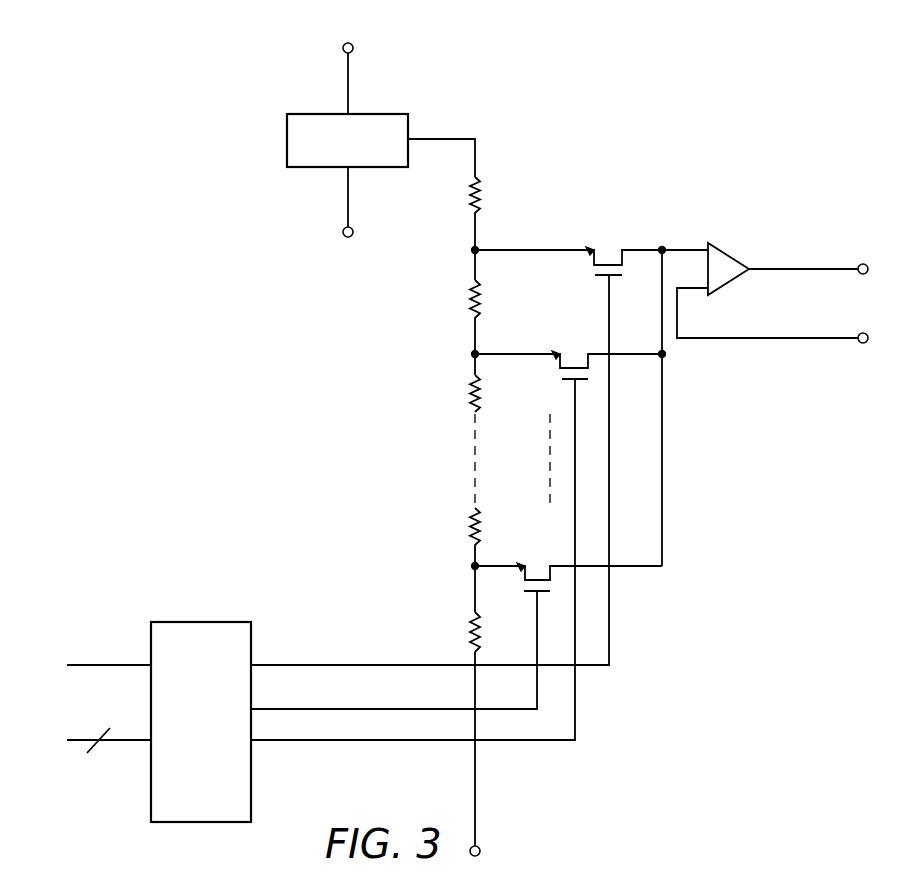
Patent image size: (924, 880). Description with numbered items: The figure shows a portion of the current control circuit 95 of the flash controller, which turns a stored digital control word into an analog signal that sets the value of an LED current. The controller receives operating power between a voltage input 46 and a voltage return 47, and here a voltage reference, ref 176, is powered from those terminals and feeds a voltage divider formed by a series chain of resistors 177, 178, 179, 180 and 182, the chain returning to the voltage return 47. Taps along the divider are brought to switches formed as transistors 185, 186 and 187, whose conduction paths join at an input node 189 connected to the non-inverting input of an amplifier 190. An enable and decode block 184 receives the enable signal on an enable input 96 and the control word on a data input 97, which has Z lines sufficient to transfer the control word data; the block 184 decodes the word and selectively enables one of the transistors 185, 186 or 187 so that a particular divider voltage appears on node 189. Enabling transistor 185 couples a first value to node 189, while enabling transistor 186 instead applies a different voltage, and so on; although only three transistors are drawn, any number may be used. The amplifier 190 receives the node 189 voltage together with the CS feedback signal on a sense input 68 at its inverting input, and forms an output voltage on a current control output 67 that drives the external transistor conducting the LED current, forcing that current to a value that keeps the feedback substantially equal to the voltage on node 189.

The voltage input 46 is at (353, 46).
The voltage return 47 is at (342, 237).
The current control output 67 is at (863, 264).
The sense input 68 is at (863, 333).
The current control circuit 95 is at (609, 812).
The enable input 96 is at (74, 662).
The data input 97 is at (74, 737).
The voltage reference 176 is at (302, 168).
The resistor 177 is at (478, 181).
The resistor 178 is at (472, 283).
The resistor 179 is at (472, 378).
The resistor 180 is at (472, 510).
The resistor 182 is at (472, 617).
The enable and decode block 184 is at (196, 621).
The transistor 185 is at (608, 252).
The transistor 186 is at (577, 352).
The transistor 187 is at (538, 565).
The input node 189 is at (663, 248).
The amplifier 190 is at (730, 253).